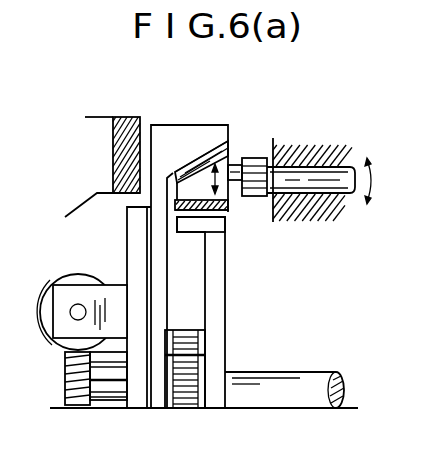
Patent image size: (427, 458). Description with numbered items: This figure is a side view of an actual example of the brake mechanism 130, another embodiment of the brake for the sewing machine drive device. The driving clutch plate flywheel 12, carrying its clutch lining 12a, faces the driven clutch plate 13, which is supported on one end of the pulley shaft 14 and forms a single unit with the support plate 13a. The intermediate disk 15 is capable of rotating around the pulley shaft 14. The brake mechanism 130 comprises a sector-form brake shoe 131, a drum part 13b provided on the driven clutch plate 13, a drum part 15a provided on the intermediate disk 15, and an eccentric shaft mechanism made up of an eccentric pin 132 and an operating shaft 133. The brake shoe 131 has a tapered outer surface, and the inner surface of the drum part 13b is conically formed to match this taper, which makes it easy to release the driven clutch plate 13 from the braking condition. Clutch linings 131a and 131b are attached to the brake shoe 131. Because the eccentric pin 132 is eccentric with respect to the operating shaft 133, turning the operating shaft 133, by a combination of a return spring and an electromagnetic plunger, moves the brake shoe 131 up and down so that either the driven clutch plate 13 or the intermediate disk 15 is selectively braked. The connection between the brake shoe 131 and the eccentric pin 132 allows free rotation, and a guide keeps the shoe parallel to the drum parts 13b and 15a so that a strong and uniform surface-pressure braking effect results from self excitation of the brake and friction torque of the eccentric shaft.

The driving clutch plate flywheel 12 is at (100, 148).
The clutch lining 12a is at (125, 120).
The driven clutch plate 13 is at (158, 137).
The support plate 13a is at (138, 397).
The drum part 13b is at (223, 137).
The brake shoe 131 is at (223, 225).
The clutch lining 131a is at (232, 139).
The clutch lining 131b is at (207, 193).
The brake mechanism 130 is at (301, 158).
The eccentric pin 132 is at (257, 150).
The operating shaft 133 is at (342, 197).
The intermediate disk 15 is at (212, 312).
The drum part 15a is at (192, 226).
The pulley shaft 14 is at (298, 383).